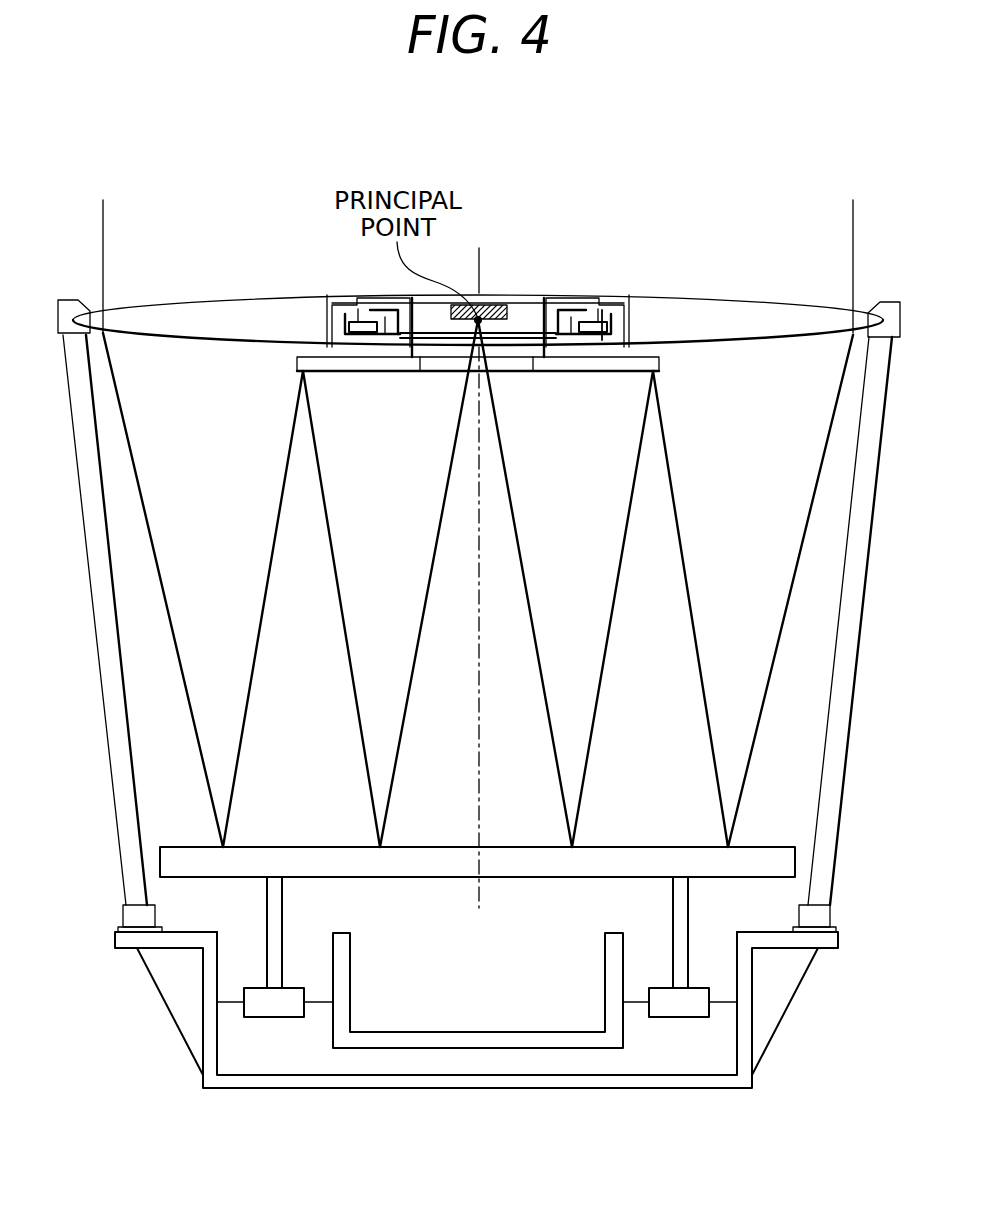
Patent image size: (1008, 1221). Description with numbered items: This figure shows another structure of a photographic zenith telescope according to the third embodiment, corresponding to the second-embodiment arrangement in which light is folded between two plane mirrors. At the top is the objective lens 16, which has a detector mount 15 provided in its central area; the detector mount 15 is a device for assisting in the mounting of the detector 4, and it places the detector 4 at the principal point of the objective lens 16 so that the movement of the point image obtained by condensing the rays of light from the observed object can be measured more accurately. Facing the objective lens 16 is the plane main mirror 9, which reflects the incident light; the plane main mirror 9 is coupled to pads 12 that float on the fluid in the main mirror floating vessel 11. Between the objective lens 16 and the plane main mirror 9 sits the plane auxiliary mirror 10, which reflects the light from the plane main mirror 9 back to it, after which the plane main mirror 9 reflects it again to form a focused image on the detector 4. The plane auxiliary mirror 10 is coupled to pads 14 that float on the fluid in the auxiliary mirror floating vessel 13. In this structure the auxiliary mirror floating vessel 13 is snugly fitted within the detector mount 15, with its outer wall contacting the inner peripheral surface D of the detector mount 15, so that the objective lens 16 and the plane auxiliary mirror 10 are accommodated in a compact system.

The detector 4 is at (498, 305).
The plane main mirror 9 is at (780, 847).
The plane auxiliary mirror 10 is at (378, 376).
The main mirror floating vessel 11 is at (727, 1090).
The pads 12 is at (257, 1017).
The auxiliary mirror floating vessel 13 is at (585, 340).
The pads 14 is at (598, 338).
The detector mount 15 is at (524, 296).
The objective lens 16 is at (689, 297).
The inner peripheral surface D is at (615, 306).